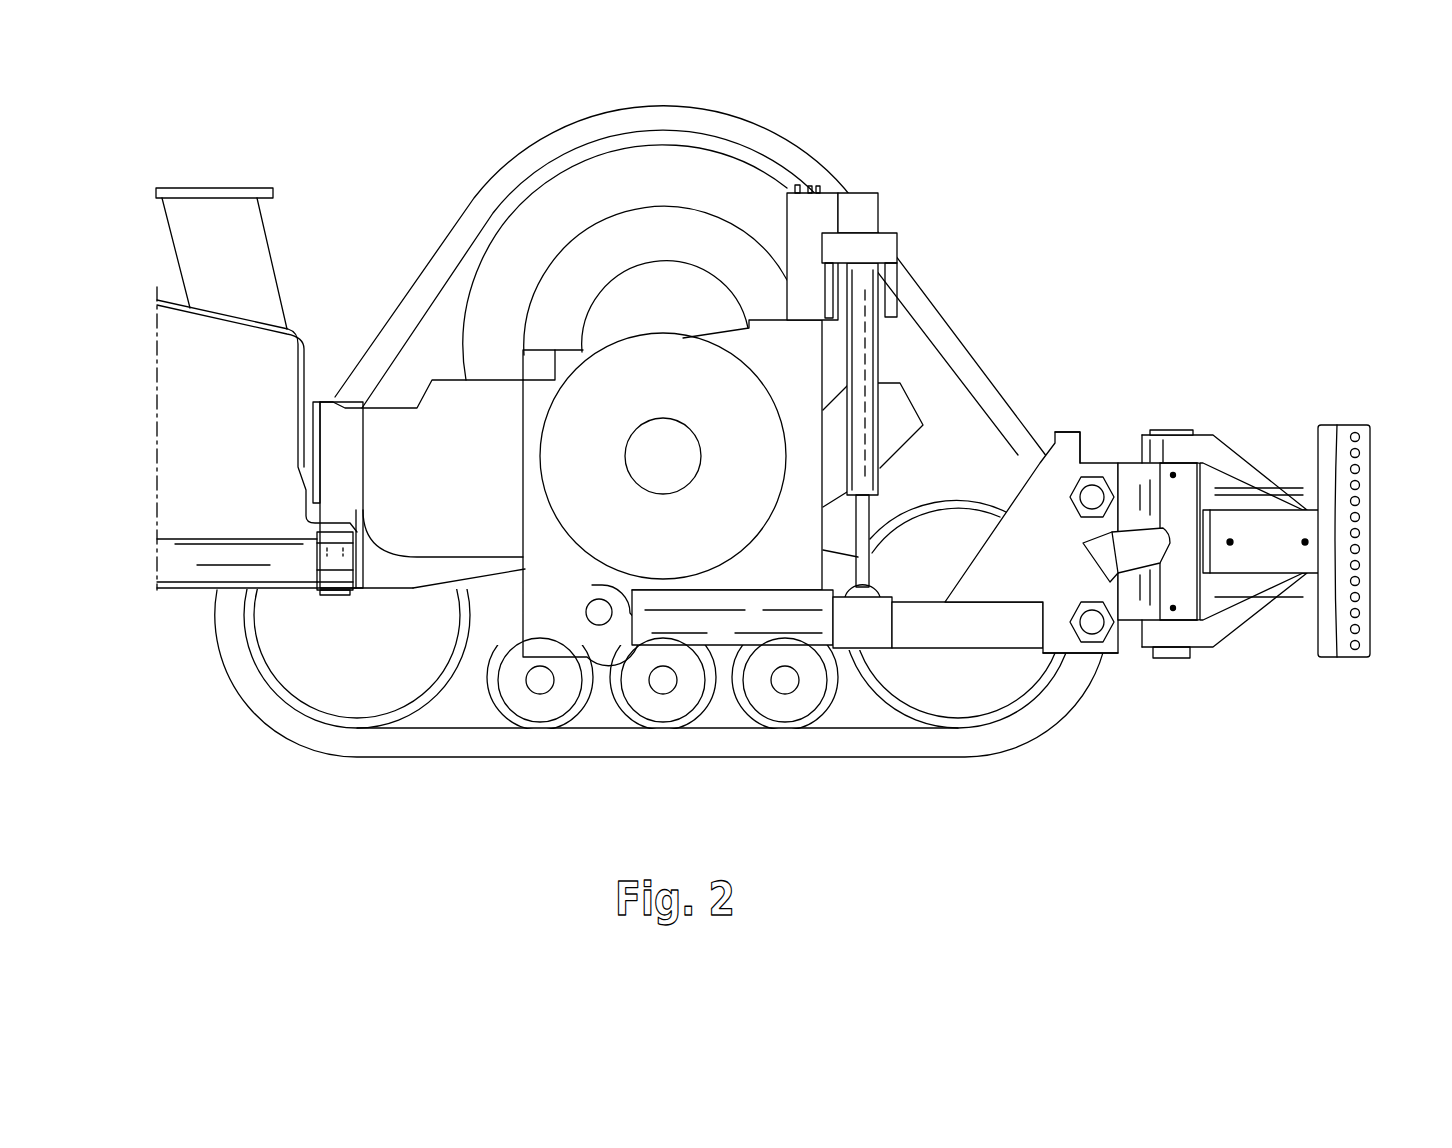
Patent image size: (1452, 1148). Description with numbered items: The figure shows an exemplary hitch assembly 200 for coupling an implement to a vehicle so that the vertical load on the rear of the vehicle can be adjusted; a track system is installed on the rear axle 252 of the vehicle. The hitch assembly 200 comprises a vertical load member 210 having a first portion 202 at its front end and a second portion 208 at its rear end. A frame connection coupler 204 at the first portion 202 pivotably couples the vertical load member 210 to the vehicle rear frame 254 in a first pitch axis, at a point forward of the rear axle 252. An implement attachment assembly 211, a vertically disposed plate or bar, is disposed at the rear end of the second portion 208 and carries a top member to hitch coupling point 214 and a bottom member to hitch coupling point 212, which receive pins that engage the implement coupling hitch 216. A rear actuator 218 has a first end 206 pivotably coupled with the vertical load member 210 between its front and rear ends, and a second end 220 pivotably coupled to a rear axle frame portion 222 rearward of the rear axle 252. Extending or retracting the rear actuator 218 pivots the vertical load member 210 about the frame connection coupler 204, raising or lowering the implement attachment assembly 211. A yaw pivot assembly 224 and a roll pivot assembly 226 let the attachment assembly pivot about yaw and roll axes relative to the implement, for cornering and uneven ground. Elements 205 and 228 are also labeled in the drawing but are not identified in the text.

The hitch assembly 200 is at (782, 472).
The first portion 202 is at (701, 627).
The frame connection coupler 204 is at (588, 640).
The arch frame 205 is at (981, 249).
The first end 206 is at (858, 617).
The second portion 208 is at (1008, 636).
The vertical load member 210 is at (938, 540).
The implement attachment assembly 211 is at (1088, 420).
The bottom member to hitch coupling point 212 is at (1093, 647).
The top member to hitch coupling point 214 is at (1097, 470).
The implement coupling hitch 216 is at (1250, 448).
The rear actuator 218 is at (862, 318).
The second end 220 is at (880, 236).
The rear axle frame portion 222 is at (837, 252).
The yaw pivot assembly 224 is at (1176, 428).
The roll pivot assembly 226 is at (1213, 563).
The end plate 228 is at (1345, 400).
The rear axle 252 is at (636, 418).
The vehicle rear frame 254 is at (545, 580).